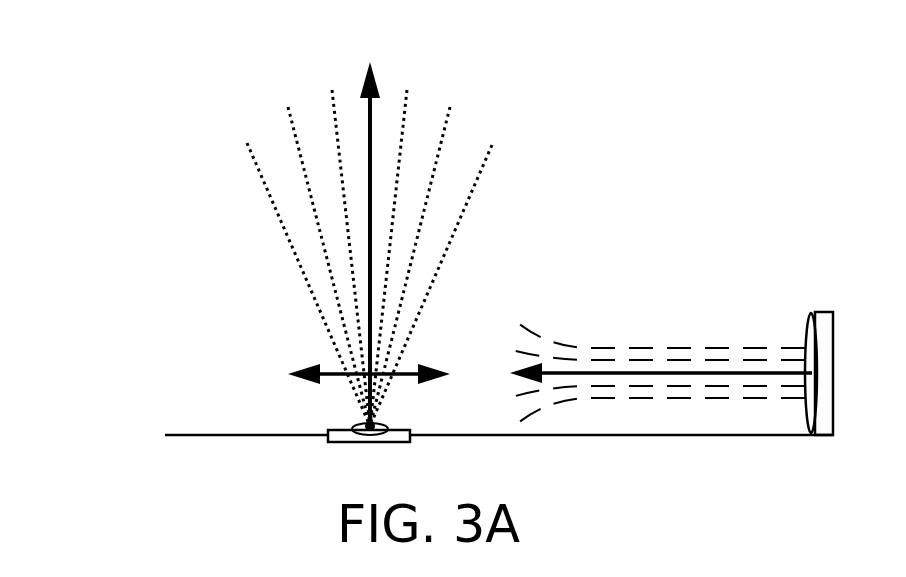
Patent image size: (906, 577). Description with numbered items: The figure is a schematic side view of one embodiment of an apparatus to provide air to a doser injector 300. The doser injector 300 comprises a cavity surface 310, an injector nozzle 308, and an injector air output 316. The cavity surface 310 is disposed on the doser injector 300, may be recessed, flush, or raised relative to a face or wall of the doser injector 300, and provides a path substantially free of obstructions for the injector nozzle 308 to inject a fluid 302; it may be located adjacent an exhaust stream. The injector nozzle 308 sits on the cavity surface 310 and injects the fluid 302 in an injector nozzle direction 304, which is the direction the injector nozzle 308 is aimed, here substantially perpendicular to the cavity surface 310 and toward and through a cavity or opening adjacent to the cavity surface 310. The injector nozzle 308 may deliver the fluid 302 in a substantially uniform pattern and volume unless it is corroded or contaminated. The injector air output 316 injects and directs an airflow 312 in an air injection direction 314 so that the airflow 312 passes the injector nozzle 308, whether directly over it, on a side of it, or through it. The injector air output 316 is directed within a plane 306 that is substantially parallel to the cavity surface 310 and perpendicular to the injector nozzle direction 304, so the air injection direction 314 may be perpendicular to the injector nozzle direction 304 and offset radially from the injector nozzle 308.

The doser injector 300 is at (62, 74).
The fluid 302 is at (258, 168).
The injector nozzle direction 304 is at (368, 112).
The plane 306 is at (320, 373).
The injector nozzle 308 is at (360, 426).
The cavity surface 310 is at (213, 436).
The airflow 312 is at (730, 348).
The air injection direction 314 is at (637, 370).
The injector air output 316 is at (808, 332).